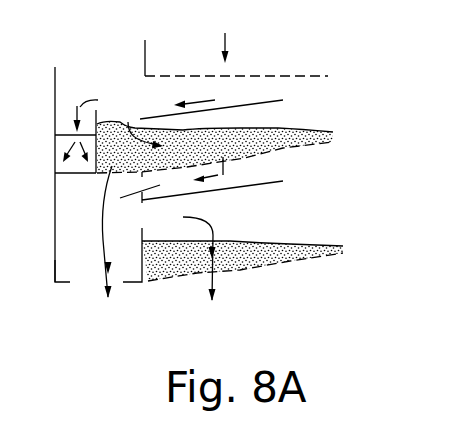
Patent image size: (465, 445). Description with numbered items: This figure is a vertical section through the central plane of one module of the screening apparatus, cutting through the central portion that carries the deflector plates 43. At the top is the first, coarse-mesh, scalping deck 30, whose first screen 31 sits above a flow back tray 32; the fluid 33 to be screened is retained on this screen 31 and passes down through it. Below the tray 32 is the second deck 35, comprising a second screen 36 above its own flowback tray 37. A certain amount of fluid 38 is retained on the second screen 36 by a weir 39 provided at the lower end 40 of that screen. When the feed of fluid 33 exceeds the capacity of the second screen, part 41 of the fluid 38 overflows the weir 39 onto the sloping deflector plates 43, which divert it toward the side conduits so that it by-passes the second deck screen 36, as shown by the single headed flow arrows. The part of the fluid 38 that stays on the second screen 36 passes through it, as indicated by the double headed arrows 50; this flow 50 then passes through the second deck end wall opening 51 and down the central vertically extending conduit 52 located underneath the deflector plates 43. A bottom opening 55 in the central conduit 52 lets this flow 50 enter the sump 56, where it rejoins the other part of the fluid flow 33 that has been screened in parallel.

The first deck 30 is at (358, 85).
The first screen 31 is at (318, 76).
The flow back tray 32 is at (282, 101).
The fluid to be screened 33 is at (225, 47).
The second deck 35 is at (313, 170).
The second screen 36 is at (320, 145).
The flowback tray 37 is at (272, 183).
The fluid retained on second screen 38 is at (110, 158).
The weir 39 is at (55, 135).
The lower end 40 is at (103, 185).
The overflow part of fluid 41 is at (77, 106).
The deflector plate 43 is at (72, 172).
The fluid flow through second screen 50 is at (223, 175).
The second deck end wall opening 51 is at (190, 199).
The central vertical conduit 52 is at (77, 253).
The bottom opening 55 is at (83, 278).
The sump 56 is at (168, 322).